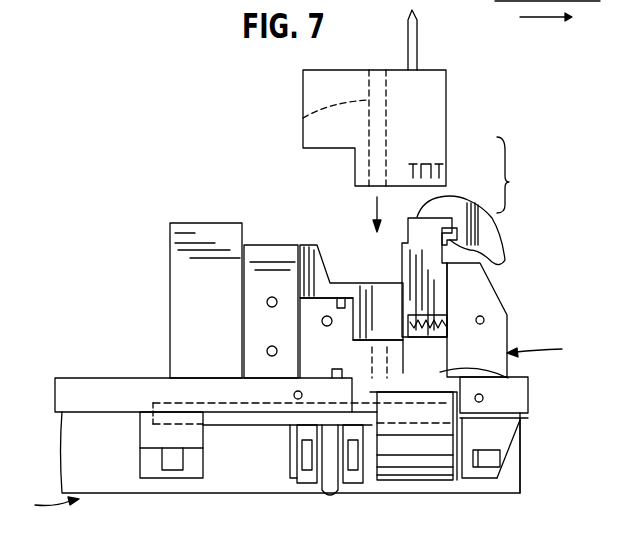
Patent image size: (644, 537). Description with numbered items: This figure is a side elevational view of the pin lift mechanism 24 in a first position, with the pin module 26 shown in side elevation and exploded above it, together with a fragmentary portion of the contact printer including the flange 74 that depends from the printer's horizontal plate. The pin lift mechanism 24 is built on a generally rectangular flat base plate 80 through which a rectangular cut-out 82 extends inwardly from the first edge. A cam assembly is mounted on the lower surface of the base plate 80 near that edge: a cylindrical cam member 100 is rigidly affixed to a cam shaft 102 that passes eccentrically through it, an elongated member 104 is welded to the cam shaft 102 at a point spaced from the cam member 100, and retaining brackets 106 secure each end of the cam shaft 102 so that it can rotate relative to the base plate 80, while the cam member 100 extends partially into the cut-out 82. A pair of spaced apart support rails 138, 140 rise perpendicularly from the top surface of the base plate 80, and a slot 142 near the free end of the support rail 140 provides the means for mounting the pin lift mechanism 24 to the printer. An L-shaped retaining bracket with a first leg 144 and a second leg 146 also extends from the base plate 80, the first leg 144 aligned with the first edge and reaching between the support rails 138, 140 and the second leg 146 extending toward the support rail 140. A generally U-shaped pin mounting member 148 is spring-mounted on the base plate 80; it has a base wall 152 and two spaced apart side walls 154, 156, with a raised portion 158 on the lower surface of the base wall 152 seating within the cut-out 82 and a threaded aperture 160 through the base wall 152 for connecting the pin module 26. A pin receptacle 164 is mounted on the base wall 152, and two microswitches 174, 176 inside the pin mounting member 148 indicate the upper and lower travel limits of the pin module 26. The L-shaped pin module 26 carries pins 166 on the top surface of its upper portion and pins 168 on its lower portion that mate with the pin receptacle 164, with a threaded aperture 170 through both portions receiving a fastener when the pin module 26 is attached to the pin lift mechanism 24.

The pin lift mechanism 24 is at (43, 509).
The pin module 26 is at (440, 111).
The flange 74 is at (460, 240).
The base plate 80 is at (65, 382).
The rectangular cut-out 82 is at (530, 419).
The cylindrical cam member 100 is at (450, 478).
The cam shaft 102 is at (260, 425).
The elongated member 104 is at (335, 493).
The retaining brackets 106 is at (193, 470).
The support rail 138 is at (180, 240).
The support rail 140 is at (447, 262).
The slot 142 is at (500, 222).
The first leg 144 is at (255, 255).
The second leg 146 is at (310, 252).
The pin mounting member 148 is at (512, 357).
The base wall 152 is at (403, 373).
The side wall 154 is at (483, 298).
The side wall 156 is at (307, 325).
The raised portion 158 is at (508, 378).
The threaded aperture 160 is at (372, 347).
The pin receptacle 164 is at (553, 350).
The pins 166 is at (418, 60).
The pins 168 is at (446, 168).
The threaded aperture 170 is at (303, 122).
The microswitch 174 is at (335, 378).
The microswitch 176 is at (342, 298).